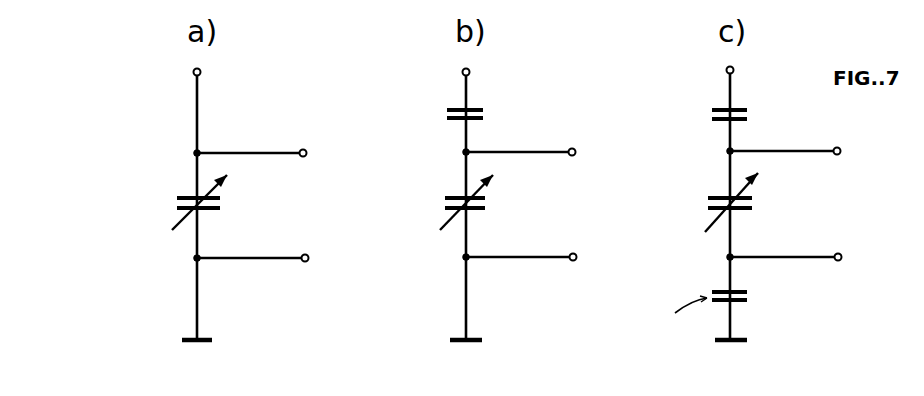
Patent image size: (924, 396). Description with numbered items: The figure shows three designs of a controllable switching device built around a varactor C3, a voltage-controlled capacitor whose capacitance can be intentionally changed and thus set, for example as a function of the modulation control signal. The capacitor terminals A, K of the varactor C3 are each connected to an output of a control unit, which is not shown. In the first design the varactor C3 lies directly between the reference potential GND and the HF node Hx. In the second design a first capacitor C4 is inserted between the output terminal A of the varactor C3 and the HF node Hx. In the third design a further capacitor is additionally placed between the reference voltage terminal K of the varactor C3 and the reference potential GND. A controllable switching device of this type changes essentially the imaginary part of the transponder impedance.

The HF node Hx is at (208, 73).
The output terminal of the varactor A is at (190, 153).
The varactor C3 is at (173, 205).
The first capacitor C4 is at (442, 110).
The reference voltage terminal of the varactor K is at (190, 258).
The reference potential GND is at (207, 337).